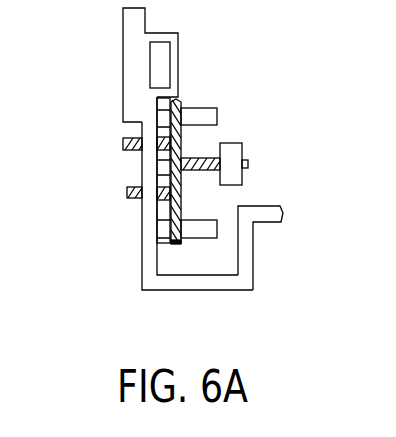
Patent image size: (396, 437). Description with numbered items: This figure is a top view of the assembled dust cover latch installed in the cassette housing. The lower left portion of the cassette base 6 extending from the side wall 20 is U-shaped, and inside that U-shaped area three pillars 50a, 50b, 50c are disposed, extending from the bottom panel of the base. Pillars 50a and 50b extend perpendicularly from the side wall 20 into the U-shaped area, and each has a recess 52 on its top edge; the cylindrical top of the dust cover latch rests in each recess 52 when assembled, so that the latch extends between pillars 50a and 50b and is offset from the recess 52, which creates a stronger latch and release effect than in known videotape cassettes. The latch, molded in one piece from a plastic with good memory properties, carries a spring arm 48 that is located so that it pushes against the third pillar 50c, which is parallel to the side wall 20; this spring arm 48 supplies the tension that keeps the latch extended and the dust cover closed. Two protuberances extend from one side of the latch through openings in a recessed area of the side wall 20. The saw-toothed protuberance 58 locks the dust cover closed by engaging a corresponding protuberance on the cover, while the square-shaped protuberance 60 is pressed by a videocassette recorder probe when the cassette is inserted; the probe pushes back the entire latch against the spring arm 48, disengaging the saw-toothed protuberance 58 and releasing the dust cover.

The cassette base 6 is at (245, 248).
The side wall 20 is at (122, 70).
The spring arm 48 is at (198, 158).
The pillar 50a is at (196, 112).
The pillar 50b is at (202, 232).
The pillar 50c is at (235, 153).
The recess 52 is at (142, 237).
The protuberance 58 is at (126, 190).
The square-shaped protuberance 60 is at (122, 144).